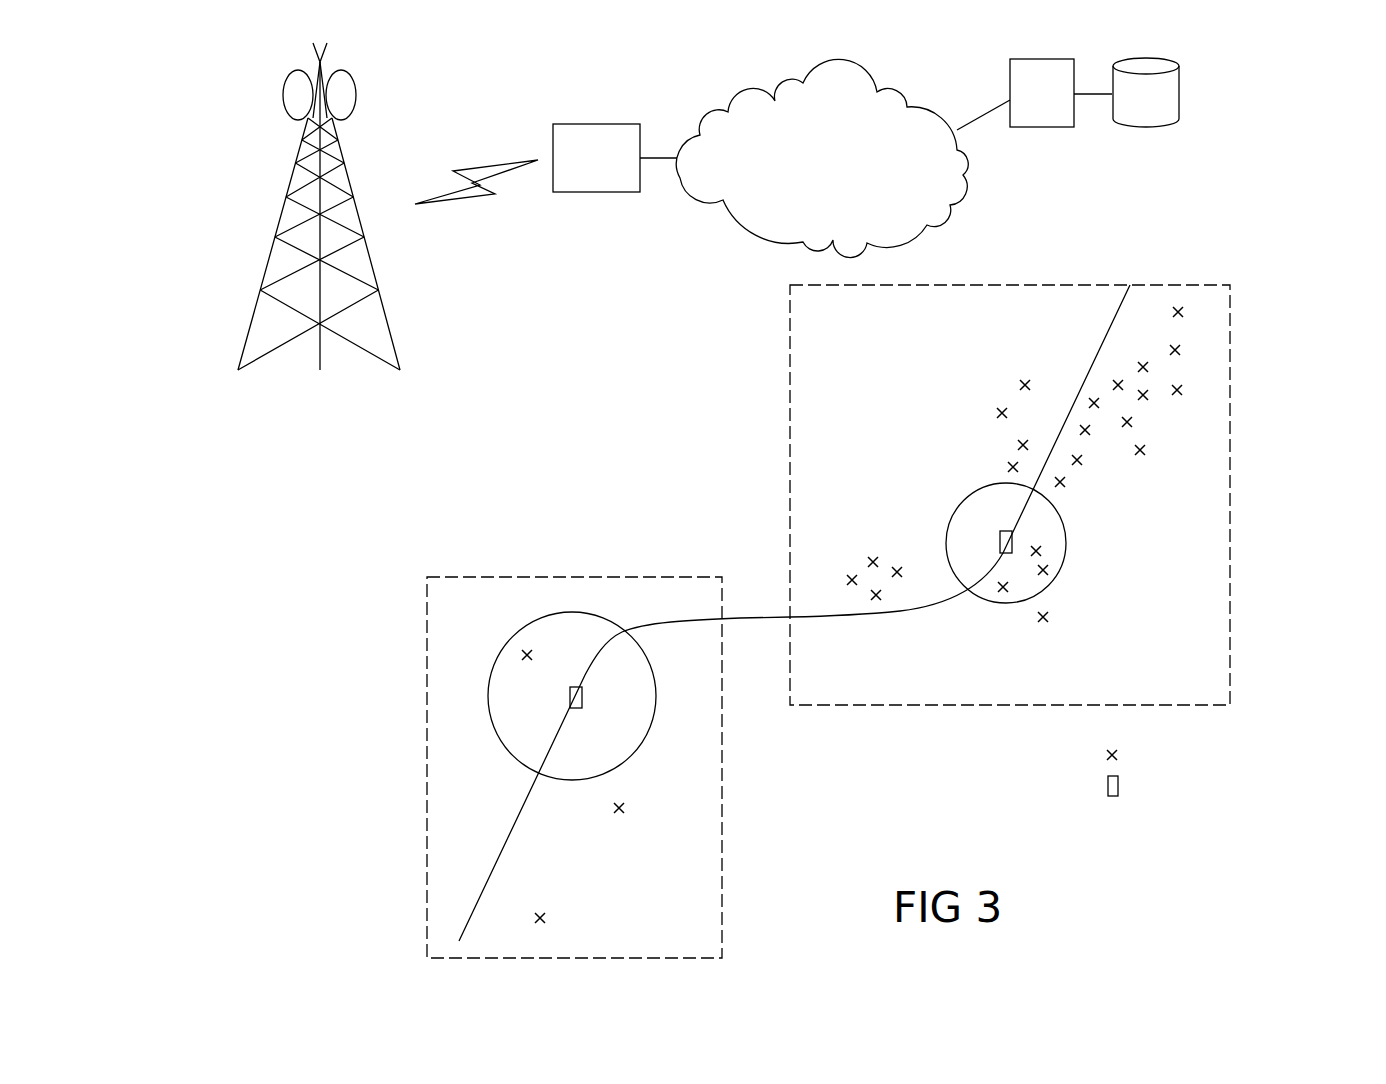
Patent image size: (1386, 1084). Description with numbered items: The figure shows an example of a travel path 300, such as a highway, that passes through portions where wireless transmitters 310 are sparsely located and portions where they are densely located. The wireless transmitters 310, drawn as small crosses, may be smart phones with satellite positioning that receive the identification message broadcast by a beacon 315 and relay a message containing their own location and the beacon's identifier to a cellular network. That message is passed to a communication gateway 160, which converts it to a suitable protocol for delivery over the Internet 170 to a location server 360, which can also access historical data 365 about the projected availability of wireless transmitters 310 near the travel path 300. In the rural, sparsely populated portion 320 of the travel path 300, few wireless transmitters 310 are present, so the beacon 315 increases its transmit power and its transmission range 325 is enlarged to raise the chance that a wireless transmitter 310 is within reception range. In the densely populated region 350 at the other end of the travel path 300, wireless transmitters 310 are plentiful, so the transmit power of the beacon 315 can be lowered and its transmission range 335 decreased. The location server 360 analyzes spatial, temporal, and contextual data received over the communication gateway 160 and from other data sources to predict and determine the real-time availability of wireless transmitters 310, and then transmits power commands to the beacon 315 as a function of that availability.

The communication gateway 160 is at (596, 158).
The Internet 170 is at (822, 158).
The travel path 300 is at (830, 617).
The wireless transmitters 310 is at (873, 615).
The beacon 315 is at (869, 663).
The sparsely located portion 320 is at (593, 577).
The transmission range 325 is at (532, 622).
The transmission range 335 is at (1063, 514).
The second region 350 is at (1041, 285).
The location server 360 is at (1042, 93).
The historical data 365 is at (1146, 92).